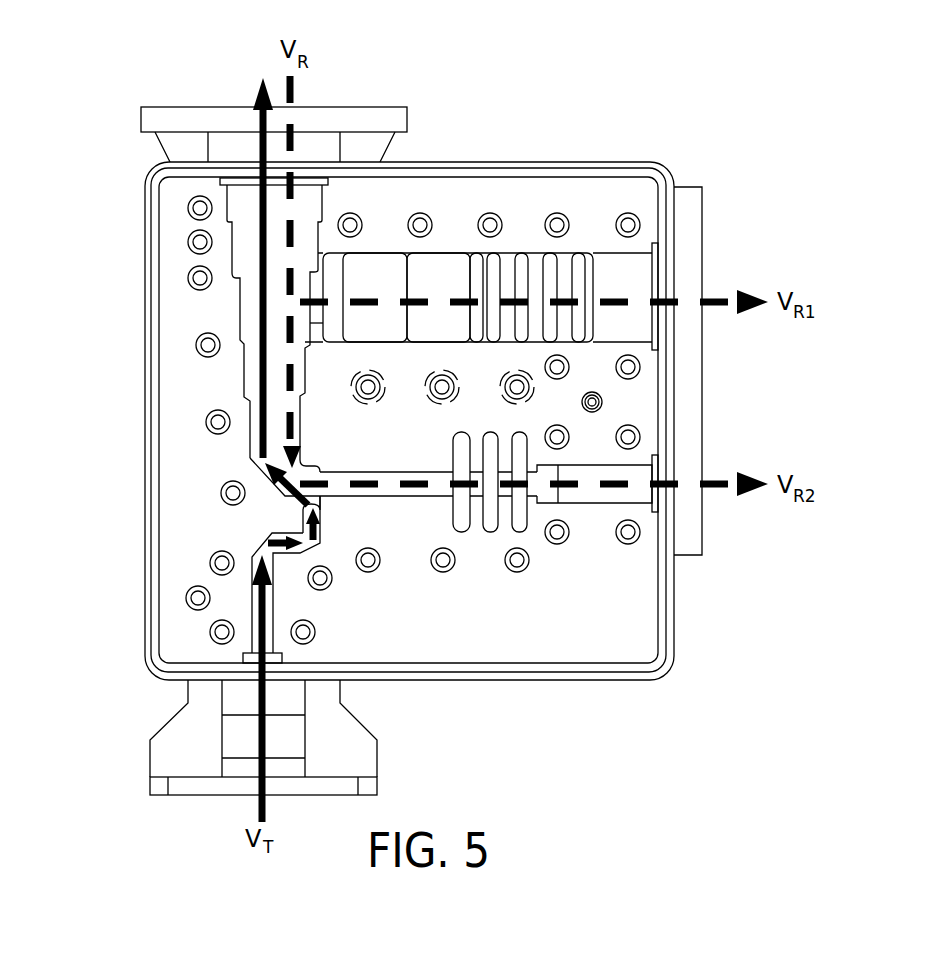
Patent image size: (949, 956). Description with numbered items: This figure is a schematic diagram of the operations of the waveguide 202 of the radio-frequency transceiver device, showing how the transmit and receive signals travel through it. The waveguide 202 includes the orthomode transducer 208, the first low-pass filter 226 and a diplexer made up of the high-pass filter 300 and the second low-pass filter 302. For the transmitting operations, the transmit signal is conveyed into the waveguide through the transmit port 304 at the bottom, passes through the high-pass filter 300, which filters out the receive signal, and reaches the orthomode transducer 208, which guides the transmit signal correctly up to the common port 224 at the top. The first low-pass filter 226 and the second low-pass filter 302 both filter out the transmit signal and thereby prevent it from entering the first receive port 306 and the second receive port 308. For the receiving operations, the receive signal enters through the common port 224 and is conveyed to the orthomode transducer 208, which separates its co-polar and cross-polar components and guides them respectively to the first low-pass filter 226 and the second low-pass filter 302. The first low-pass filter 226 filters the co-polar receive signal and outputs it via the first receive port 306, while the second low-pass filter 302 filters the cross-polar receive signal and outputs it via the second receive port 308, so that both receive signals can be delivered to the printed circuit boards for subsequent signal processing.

The waveguide 202 is at (832, 88).
The common port 224 is at (145, 120).
The orthomode transducer 208 is at (243, 308).
The first low-pass filter 226 is at (522, 263).
The first receive port 306 is at (657, 260).
The high-pass filter 300 is at (253, 558).
The second low-pass filter 302 is at (467, 528).
The second receive port 308 is at (657, 500).
The transmit port 304 is at (152, 790).